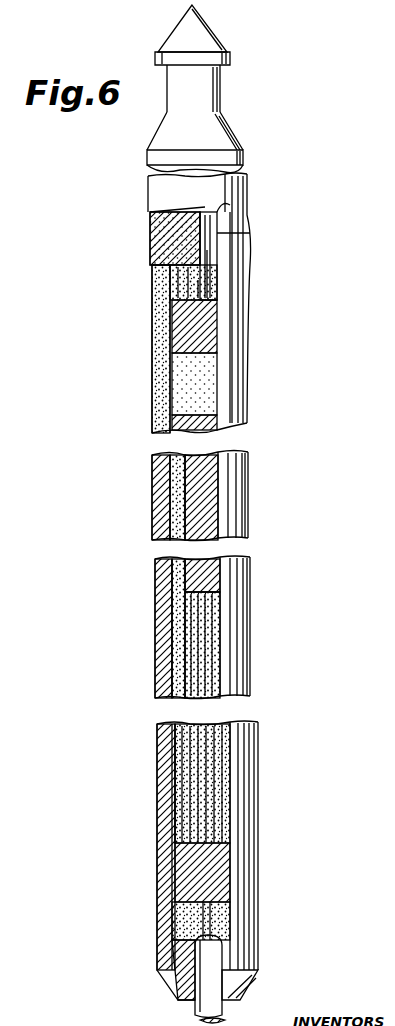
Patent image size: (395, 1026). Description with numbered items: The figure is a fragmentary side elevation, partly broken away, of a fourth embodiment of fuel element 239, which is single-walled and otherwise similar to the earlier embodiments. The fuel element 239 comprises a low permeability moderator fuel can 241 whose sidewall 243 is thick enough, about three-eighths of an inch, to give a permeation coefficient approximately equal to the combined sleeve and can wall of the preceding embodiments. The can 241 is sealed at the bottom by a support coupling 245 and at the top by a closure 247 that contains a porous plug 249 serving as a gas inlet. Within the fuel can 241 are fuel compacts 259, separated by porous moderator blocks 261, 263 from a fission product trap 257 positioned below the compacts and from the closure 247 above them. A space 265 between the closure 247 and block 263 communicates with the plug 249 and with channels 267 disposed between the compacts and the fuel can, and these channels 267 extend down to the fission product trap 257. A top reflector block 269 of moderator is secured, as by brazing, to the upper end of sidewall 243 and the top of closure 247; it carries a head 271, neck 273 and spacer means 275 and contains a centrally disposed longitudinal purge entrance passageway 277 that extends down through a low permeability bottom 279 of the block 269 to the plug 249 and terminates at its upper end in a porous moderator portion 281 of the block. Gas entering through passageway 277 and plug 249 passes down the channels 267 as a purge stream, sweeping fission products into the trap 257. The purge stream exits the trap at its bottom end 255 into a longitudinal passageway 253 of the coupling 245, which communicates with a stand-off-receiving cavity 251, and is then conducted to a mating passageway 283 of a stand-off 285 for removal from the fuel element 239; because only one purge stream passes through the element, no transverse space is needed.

The fuel element 239 is at (193, 128).
The moderator fuel can 241 is at (153, 375).
The sidewall 243 is at (153, 403).
The support coupling 245 is at (172, 920).
The closure 247 is at (152, 290).
The porous plug 249 is at (217, 280).
The stand-off-receiving cavity 251 is at (190, 940).
The longitudinal passageway 253 is at (212, 925).
The bottom end 255 is at (228, 880).
The fission product trap 257 is at (223, 788).
The fuel compacts 259 is at (222, 388).
The porous moderator block 261 is at (190, 571).
The porous moderator block 263 is at (217, 333).
The space 265 is at (190, 299).
The channels 267 is at (153, 333).
The top reflector block 269 is at (150, 222).
The head 271 is at (218, 38).
The neck 273 is at (222, 85).
The spacer means 275 is at (247, 237).
The purge entrance passageway 277 is at (190, 207).
The low permeability bottom 279 is at (152, 258).
The porous moderator portion 281 is at (150, 212).
The mating passageway 283 is at (222, 1020).
The stand-off 285 is at (138, 1019).